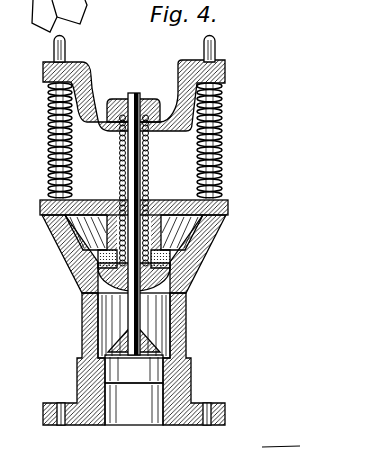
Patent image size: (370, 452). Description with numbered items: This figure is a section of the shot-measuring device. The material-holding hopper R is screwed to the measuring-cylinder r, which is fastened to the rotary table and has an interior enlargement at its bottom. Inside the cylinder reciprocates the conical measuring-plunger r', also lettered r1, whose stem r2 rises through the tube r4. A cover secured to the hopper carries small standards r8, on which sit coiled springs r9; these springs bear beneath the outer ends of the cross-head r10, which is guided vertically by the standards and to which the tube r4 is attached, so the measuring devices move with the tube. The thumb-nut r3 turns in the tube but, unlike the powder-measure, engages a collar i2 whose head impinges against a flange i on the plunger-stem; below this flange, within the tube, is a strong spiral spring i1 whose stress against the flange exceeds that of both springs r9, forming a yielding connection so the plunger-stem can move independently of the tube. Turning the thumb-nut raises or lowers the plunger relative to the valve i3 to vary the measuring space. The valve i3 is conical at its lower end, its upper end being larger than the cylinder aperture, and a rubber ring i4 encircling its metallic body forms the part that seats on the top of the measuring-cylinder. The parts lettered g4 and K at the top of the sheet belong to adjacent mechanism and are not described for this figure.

The fragment of adjacent figure g4 is at (32, 12).
The adjacent figure part K is at (86, 4).
The cross-head r10 is at (87, 68).
The standards r8 is at (218, 51).
The coiled springs r9 is at (136, 141).
The thumb-nut r3 is at (152, 99).
The stem r2 is at (133, 95).
The tube r4 is at (150, 180).
The material-holding hopper R is at (60, 239).
The measuring-plunger r1 is at (160, 231).
The measuring-cylinder r is at (112, 325).
The measuring-plunger r' is at (134, 390).
The flange i is at (152, 150).
The spiral spring i1 is at (110, 218).
The collar i2 is at (117, 149).
The valve i3 is at (100, 256).
The rubber ring i4 is at (165, 266).